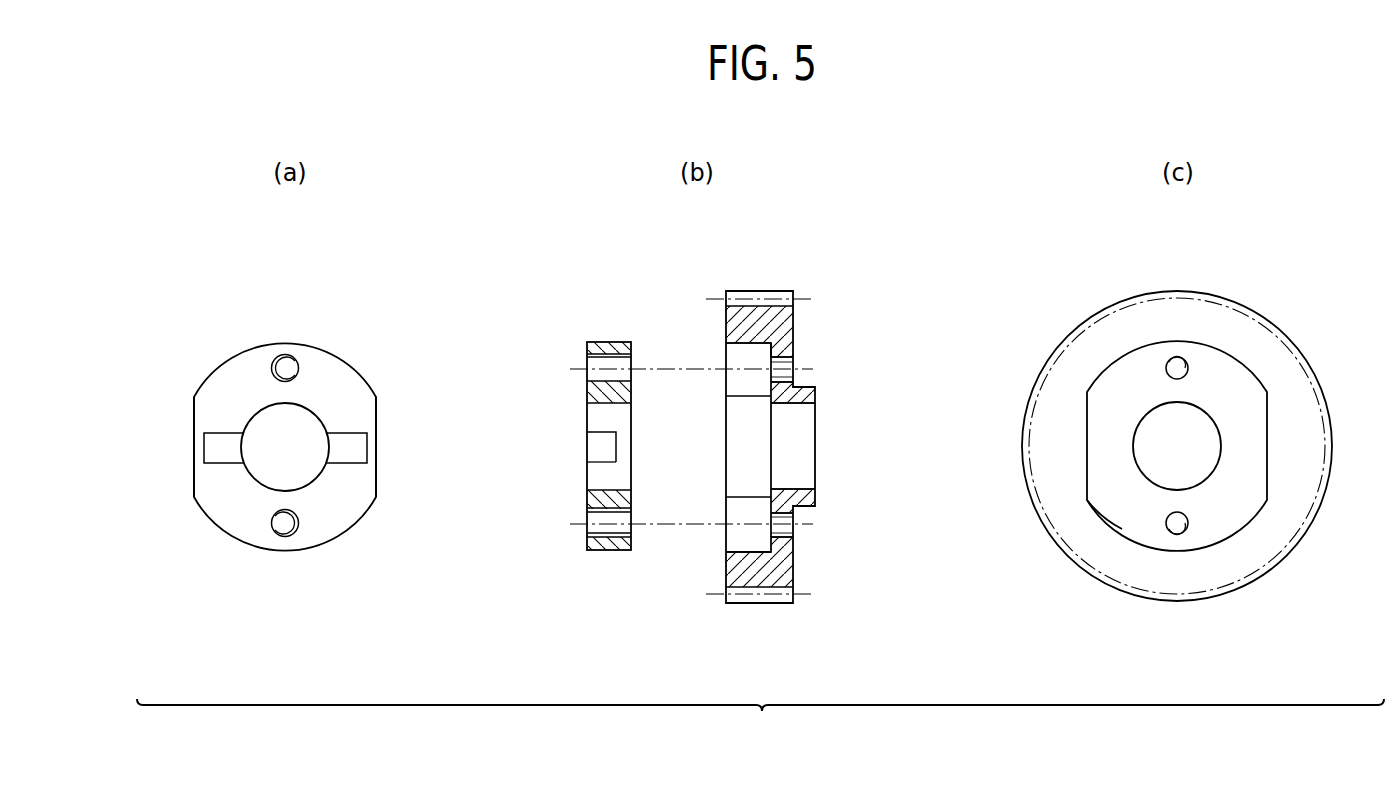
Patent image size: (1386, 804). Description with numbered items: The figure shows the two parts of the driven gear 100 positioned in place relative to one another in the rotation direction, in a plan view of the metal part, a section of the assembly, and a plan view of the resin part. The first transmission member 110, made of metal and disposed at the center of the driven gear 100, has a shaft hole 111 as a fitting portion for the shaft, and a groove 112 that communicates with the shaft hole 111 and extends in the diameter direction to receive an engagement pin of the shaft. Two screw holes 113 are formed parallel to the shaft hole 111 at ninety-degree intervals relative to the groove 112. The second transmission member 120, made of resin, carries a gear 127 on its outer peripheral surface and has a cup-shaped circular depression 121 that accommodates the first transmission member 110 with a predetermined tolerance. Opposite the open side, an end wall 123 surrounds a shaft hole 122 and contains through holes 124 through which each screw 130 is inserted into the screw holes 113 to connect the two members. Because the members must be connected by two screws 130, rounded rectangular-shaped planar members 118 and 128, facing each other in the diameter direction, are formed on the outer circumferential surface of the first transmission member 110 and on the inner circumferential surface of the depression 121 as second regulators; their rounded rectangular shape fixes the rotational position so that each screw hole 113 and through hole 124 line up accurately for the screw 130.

The driven gear 100 is at (760, 720).
The first transmission member 110 is at (368, 354).
The shaft hole 111 is at (304, 414).
The groove 112 is at (351, 449).
The screw holes 113 is at (291, 356).
The planar members 118 is at (193, 436).
The second transmission member 120 is at (793, 283).
The depression 121 is at (748, 550).
The shaft hole 122 is at (797, 489).
The end wall 123 is at (787, 357).
The through hole 124 is at (787, 373).
The gear 127 is at (757, 604).
The planar members 128 is at (737, 443).
The screw 130 is at (685, 367).